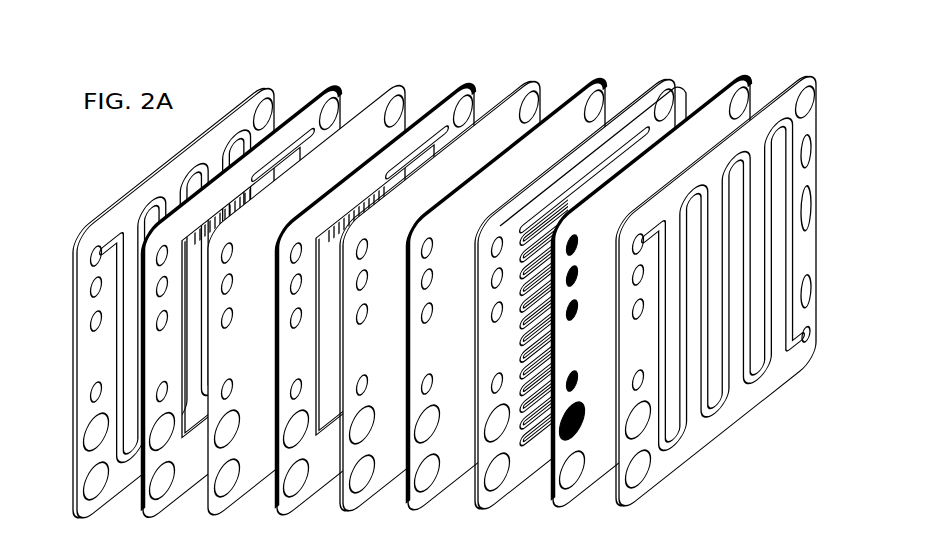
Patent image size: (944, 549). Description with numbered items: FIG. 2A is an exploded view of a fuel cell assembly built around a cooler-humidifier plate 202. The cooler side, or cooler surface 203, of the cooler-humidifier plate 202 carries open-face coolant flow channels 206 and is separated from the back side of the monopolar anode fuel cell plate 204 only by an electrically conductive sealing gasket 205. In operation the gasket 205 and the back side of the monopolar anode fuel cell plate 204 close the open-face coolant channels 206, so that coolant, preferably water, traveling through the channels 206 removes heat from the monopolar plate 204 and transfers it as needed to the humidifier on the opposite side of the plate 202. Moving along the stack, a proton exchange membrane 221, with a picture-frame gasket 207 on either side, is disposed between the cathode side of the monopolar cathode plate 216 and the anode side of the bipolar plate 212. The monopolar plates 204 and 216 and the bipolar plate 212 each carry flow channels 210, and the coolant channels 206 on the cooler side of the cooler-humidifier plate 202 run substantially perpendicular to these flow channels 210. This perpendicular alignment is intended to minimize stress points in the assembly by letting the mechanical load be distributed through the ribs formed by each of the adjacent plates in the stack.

The bipolar plate 212 is at (276, 78).
The picture-frame gasket 207 is at (341, 77).
The proton exchange membrane 221 is at (404, 76).
The monopolar cathode plate 216 is at (538, 72).
The electrically conductive sealing gasket 205 is at (604, 70).
The cooler-humidifier plate 202 is at (579, 271).
The cooler surface 203 is at (686, 80).
The monopolar anode fuel cell plate 204 is at (429, 264).
The coolant channel 206 is at (543, 447).
The flow channel 210 is at (754, 370).